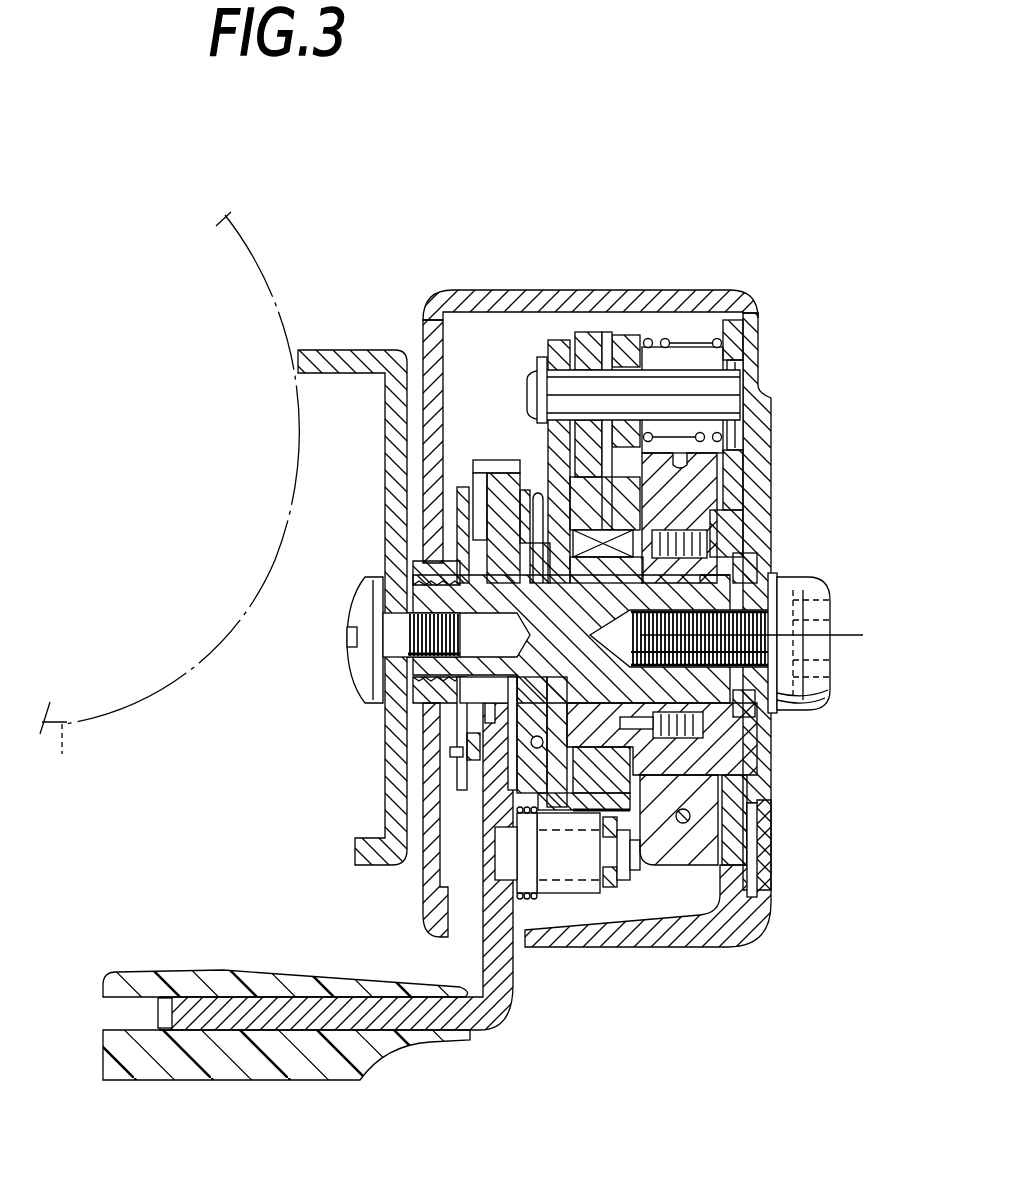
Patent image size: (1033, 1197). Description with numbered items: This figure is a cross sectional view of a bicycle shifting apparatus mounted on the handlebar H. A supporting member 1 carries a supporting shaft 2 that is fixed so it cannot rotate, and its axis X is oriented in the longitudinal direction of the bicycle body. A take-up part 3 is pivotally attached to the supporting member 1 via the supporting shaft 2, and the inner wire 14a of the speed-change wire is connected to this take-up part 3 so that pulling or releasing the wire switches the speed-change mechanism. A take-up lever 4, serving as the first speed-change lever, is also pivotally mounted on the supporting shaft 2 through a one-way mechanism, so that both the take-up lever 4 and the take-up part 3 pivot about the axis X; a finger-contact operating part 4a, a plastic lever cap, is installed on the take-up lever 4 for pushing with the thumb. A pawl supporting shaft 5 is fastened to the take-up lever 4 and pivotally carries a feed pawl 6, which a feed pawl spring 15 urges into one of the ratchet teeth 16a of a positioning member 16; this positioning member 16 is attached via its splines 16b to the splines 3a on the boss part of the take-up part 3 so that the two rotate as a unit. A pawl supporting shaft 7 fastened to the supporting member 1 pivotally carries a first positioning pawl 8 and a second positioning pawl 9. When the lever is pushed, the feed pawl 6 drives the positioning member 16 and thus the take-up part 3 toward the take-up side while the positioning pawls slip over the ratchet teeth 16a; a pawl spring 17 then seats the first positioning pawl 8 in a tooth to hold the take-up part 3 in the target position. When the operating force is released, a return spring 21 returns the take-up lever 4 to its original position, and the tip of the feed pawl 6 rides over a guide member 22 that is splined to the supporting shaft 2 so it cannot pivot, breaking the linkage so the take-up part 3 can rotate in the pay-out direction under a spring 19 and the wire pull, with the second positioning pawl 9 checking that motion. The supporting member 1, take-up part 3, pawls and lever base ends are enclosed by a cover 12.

The supporting member 1 is at (730, 457).
The supporting shaft 2 is at (423, 597).
The take-up part 3 is at (703, 857).
The splines 3a is at (587, 735).
The take-up lever 4 is at (505, 1013).
The finger-contact operating part 4a is at (160, 972).
The pawl supporting shaft 5 is at (653, 872).
The feed pawl 6 is at (614, 892).
The pawl supporting shaft 7 is at (693, 365).
The first positioning pawl 8 is at (627, 336).
The second positioning pawl 9 is at (587, 338).
The cover 12 is at (760, 347).
The inner wire 14a is at (690, 818).
The feed pawl spring 15 is at (528, 900).
The positioning member 16 is at (597, 898).
The ratchet teeth 16a is at (585, 803).
The splines 16b is at (548, 490).
The pawl spring 17 is at (665, 337).
The spring 19 is at (703, 733).
The return spring 21 is at (500, 470).
The guide member 22 is at (553, 450).
The axis X is at (845, 635).
The handlebar H is at (57, 746).